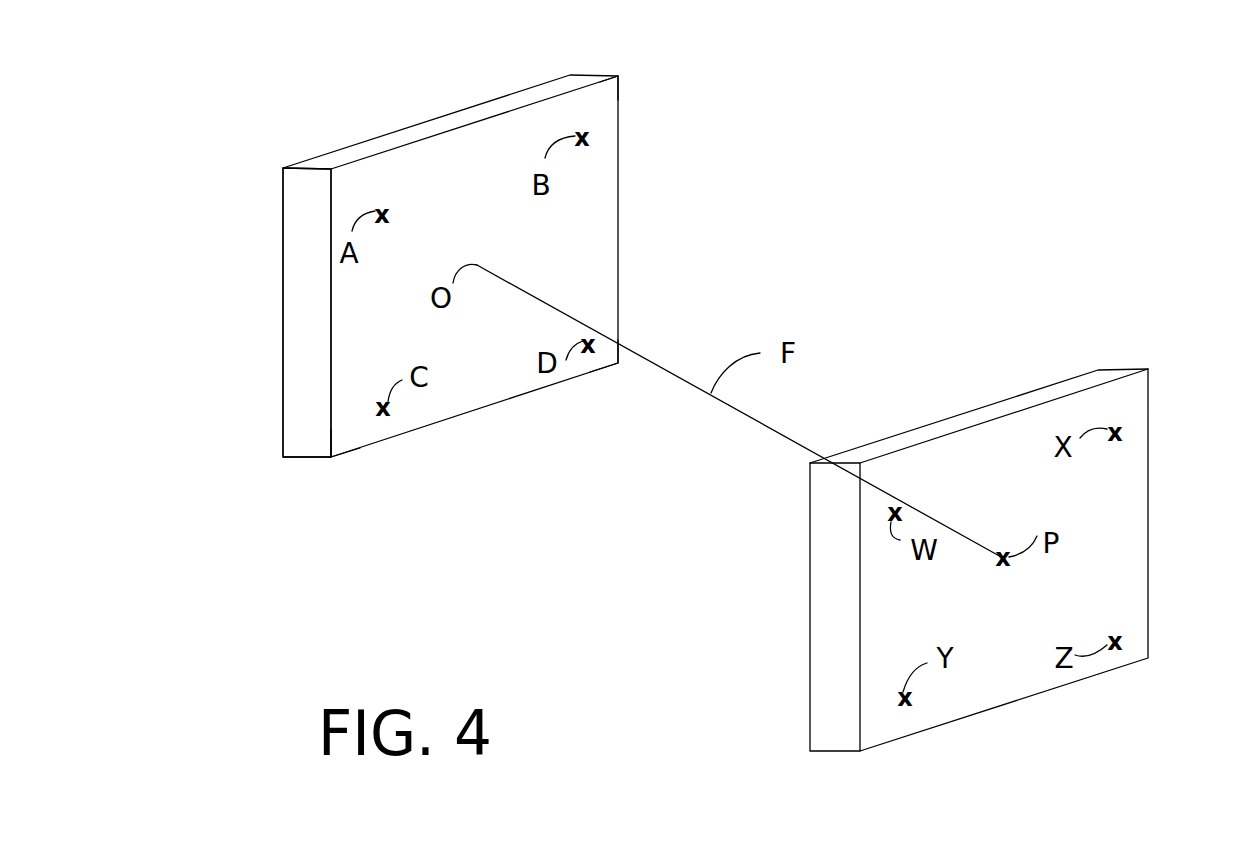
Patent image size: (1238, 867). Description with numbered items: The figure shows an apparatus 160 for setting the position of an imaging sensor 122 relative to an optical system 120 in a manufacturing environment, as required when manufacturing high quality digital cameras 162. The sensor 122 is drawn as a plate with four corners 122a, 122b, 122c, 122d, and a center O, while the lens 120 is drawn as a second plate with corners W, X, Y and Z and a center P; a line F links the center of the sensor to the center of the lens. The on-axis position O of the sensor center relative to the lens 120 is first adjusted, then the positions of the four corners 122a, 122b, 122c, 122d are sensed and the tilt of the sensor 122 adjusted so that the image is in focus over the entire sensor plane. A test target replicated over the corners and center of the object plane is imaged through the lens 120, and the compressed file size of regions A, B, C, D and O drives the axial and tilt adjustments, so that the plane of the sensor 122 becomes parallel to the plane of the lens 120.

The imaging sensor 122 is at (557, 87).
The first corner of the sensor 122a is at (330, 170).
The second corner of the sensor 122b is at (618, 77).
The third corner of the sensor 122c is at (328, 457).
The fourth corner of the sensor 122d is at (633, 362).
The optical system 120 is at (1100, 380).
The apparatus 160 is at (1002, 198).
The digital camera 162 is at (450, 501).